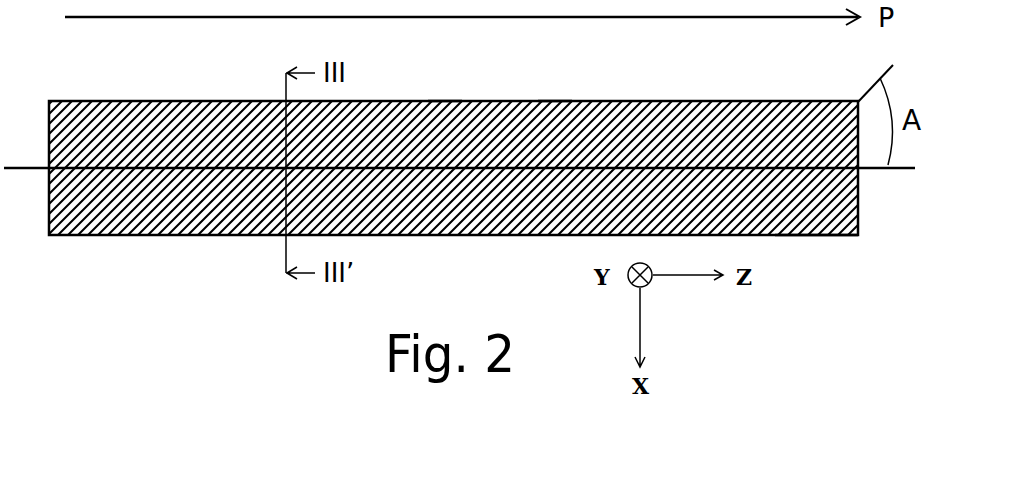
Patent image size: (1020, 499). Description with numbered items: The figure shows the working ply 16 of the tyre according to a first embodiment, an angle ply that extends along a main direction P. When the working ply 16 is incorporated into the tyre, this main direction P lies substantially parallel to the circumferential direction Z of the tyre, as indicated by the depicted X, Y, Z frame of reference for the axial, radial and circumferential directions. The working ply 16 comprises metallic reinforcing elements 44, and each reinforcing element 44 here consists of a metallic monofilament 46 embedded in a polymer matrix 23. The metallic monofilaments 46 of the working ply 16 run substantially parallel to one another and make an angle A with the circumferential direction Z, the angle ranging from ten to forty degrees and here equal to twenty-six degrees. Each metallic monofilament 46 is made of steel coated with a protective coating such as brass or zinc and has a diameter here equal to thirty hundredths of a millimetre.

The working ply 16 is at (730, 92).
The metallic reinforcing element 44 is at (444, 97).
The metallic monofilament 46 is at (553, 100).
The polymer matrix 23 is at (832, 235).